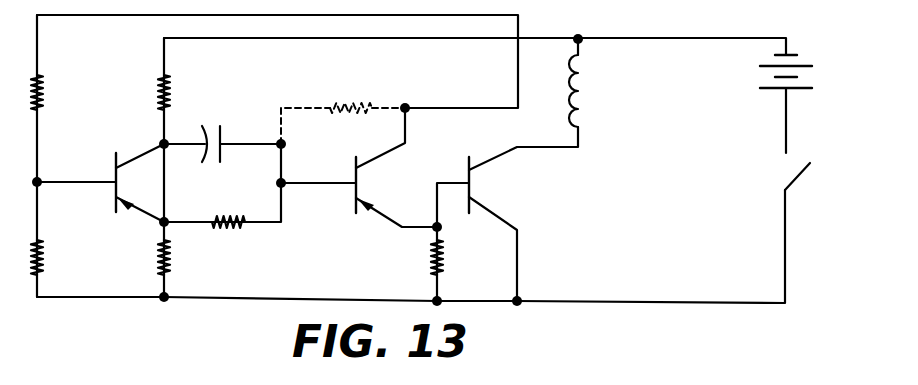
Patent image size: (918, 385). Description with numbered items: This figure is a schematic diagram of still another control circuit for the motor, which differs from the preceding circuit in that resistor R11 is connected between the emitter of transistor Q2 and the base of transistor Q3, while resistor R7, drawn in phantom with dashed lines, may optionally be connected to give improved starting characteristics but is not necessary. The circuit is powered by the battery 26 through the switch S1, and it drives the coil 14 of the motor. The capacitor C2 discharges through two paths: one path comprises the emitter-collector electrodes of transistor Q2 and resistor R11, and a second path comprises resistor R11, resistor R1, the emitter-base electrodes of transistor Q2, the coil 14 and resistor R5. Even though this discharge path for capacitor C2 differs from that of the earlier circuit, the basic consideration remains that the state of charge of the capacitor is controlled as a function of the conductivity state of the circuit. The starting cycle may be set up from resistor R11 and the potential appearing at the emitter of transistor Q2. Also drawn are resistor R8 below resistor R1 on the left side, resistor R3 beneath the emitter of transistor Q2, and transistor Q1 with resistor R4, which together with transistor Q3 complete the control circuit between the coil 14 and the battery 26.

The resistor R1 is at (44, 95).
The resistor R5 is at (171, 85).
The resistor R7 is at (343, 111).
The resistor R8 is at (44, 248).
The resistor R3 is at (171, 272).
The resistor R11 is at (239, 230).
The resistor R4 is at (444, 260).
The capacitor C2 is at (214, 166).
The transistor Q2 is at (122, 182).
The transistor Q3 is at (362, 182).
The transistor Q1 is at (475, 182).
The coil 14 is at (583, 103).
The battery 26 is at (812, 80).
The switch S1 is at (800, 176).